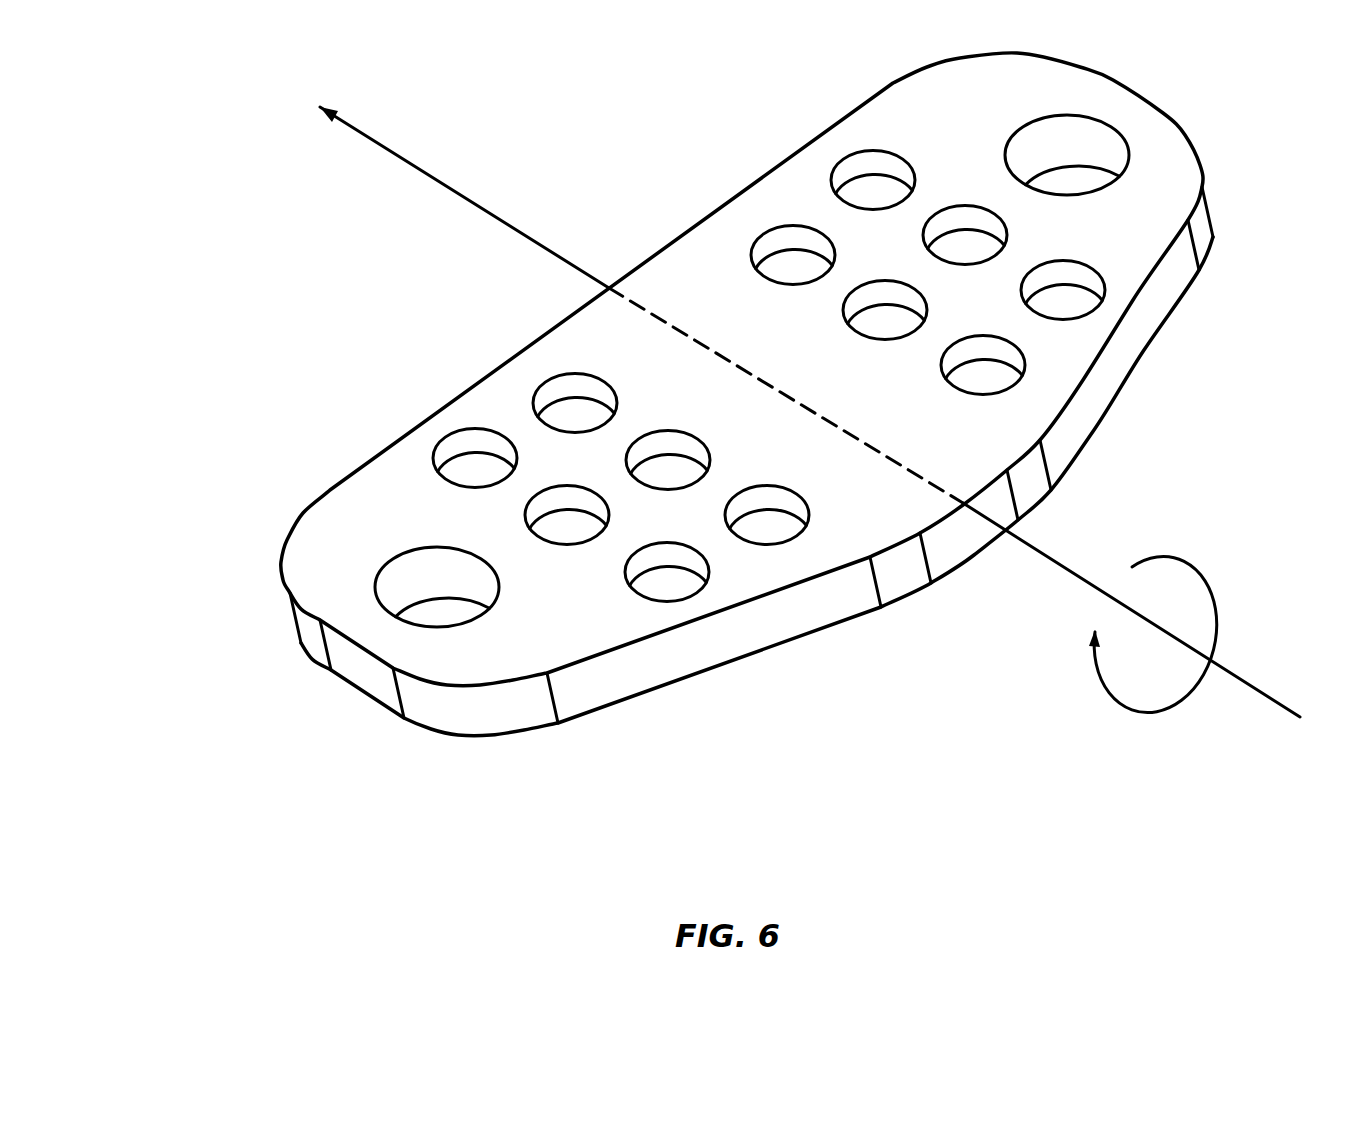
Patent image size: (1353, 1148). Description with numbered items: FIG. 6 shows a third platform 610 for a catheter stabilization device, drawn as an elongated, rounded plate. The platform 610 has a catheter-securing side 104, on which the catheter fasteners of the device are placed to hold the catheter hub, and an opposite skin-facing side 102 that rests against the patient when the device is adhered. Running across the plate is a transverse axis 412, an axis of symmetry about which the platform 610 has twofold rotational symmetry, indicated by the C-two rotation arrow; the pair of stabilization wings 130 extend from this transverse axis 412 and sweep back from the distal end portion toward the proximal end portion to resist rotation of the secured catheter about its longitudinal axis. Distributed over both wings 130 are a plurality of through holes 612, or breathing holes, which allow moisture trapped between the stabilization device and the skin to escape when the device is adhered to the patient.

The third platform 610 is at (150, 306).
The transverse axis 412 is at (463, 197).
The catheter-securing side 104 is at (473, 372).
The through holes 612 is at (788, 263).
The skin-facing side 102 is at (527, 743).
The stabilization wings 130 is at (925, 390).